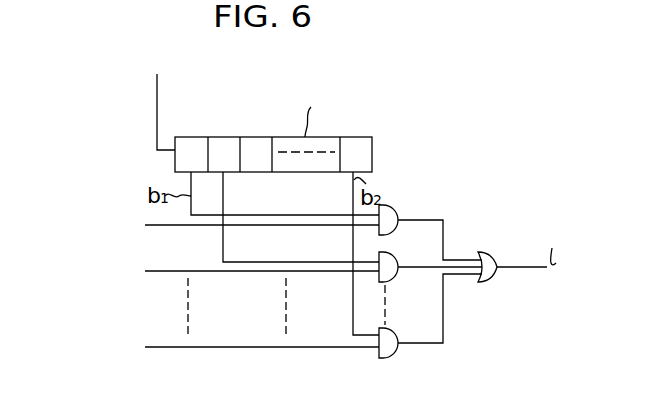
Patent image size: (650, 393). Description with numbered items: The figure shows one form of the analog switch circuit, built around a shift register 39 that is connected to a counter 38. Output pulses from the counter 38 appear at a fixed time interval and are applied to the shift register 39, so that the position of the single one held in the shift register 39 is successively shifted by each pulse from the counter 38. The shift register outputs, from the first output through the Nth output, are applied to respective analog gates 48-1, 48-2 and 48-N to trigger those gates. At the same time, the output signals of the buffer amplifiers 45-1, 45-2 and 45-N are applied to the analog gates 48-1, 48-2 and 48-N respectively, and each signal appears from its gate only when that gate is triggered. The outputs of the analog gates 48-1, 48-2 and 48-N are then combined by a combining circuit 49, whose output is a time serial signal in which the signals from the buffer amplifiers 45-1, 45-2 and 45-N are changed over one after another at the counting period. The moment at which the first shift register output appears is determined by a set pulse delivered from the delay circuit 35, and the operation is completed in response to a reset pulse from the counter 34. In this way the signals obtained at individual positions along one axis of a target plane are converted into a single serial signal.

The delay circuit 35 is at (324, 110).
The counter 34 is at (292, 128).
The counter 38 is at (159, 99).
The shift register 39 is at (208, 137).
The buffer amplifier 45-1 is at (217, 224).
The buffer amplifier 45-2 is at (213, 271).
The buffer amplifier 45-N is at (213, 347).
The analog gate 48-1 is at (390, 205).
The analog gate 48-2 is at (404, 256).
The analog gate 48-N is at (398, 348).
The combining circuit 49 is at (488, 259).